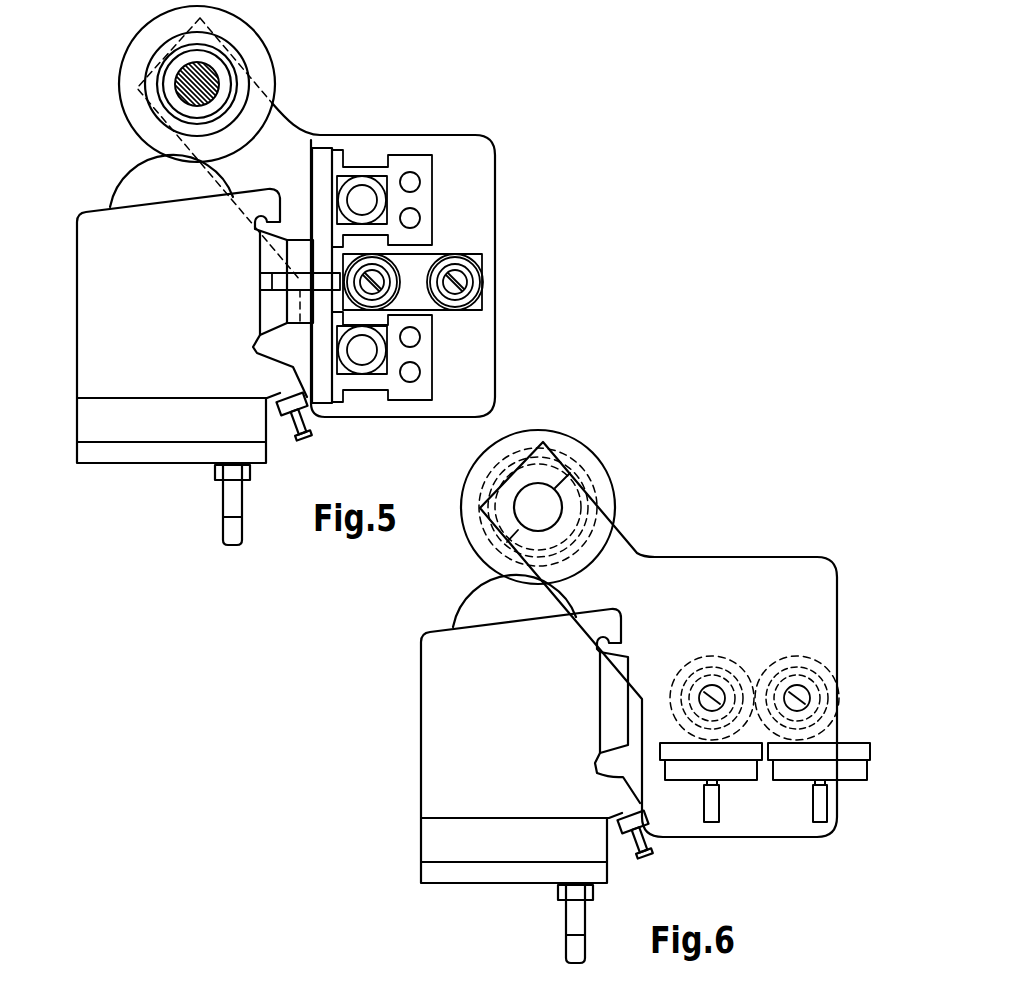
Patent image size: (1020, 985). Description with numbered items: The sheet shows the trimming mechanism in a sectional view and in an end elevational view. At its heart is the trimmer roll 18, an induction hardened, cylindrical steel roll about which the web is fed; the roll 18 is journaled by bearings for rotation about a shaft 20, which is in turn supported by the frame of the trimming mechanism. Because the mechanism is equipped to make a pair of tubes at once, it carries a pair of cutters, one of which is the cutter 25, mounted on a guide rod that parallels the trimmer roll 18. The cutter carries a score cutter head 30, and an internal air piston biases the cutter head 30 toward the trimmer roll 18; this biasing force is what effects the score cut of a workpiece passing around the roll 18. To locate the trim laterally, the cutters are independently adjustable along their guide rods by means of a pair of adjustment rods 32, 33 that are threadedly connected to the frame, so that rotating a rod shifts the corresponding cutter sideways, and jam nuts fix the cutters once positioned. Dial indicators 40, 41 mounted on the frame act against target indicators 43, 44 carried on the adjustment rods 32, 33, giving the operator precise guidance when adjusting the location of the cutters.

In FIG. 5, the trimmer roll 18 is at (260, 44).
In FIG. 6, the trimmer roll 18 is at (603, 482).
In FIG. 5, the shaft 20 is at (180, 71).
In FIG. 5, the cutter 25 is at (100, 353).
In FIG. 6, the cutter 25 is at (445, 705).
In FIG. 5, the score cutter head 30 is at (137, 178).
In FIG. 6, the score cutter head 30 is at (475, 598).
In FIG. 5, the adjustment rod 32 is at (376, 286).
In FIG. 6, the adjustment rod 32 is at (720, 693).
In FIG. 5, the adjustment rod 33 is at (480, 293).
In FIG. 6, the adjustment rod 33 is at (797, 693).
In FIG. 6, the dial indicator 40 is at (733, 763).
In FIG. 6, the dial indicator 41 is at (853, 773).
In FIG. 6, the target indicator 43 is at (685, 675).
In FIG. 6, the target indicator 44 is at (822, 668).